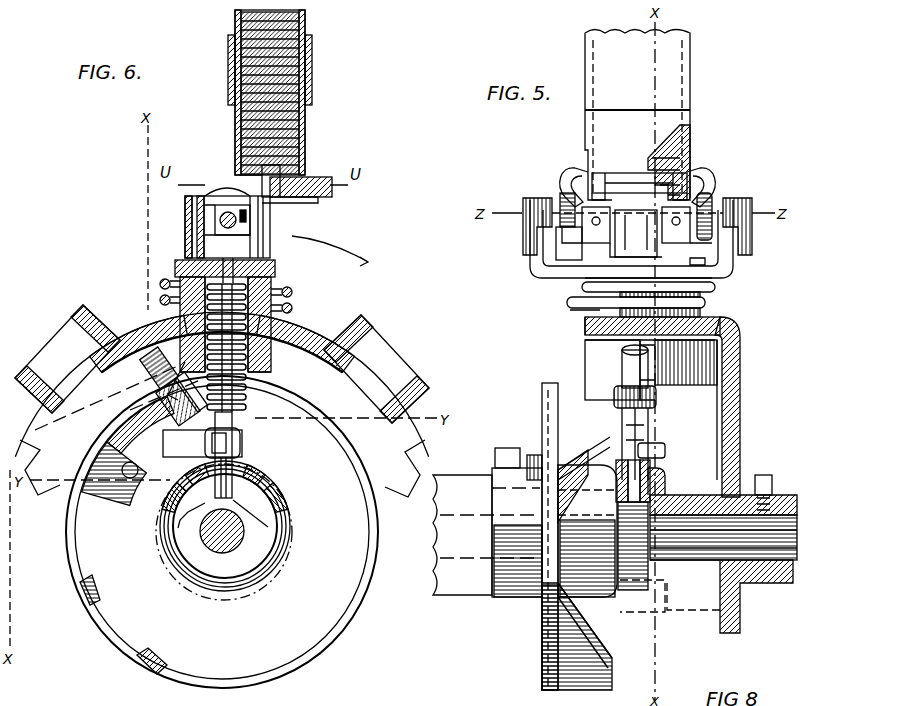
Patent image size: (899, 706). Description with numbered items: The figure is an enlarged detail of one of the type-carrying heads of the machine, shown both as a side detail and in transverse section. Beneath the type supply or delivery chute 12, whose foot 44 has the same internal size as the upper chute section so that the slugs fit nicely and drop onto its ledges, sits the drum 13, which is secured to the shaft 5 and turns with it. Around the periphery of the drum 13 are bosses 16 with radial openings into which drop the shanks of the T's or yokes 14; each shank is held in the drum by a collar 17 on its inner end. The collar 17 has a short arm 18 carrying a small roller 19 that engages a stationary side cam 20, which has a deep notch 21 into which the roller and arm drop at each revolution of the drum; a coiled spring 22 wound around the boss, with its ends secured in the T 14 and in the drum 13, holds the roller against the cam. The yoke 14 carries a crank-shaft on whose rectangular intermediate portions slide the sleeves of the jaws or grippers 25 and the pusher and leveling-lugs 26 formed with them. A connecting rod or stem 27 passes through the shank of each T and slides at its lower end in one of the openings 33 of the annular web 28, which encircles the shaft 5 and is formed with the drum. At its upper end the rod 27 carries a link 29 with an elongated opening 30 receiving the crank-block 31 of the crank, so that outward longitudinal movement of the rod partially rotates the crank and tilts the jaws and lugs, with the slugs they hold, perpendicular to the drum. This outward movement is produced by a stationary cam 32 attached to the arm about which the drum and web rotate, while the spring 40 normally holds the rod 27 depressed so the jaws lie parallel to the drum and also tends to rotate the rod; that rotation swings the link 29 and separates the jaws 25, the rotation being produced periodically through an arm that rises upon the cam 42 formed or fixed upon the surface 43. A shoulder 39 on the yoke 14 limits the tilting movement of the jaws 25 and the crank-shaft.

In FIG. 5, the shaft 5 is at (710, 560).
In FIG. 5, the type supply or delivery chute 12 is at (690, 38).
In FIG. 6, the drum 13 is at (320, 336).
In FIG. 5, the drum 13 is at (585, 345).
In FIG. 6, the T or yoke 14 is at (200, 212).
In FIG. 5, the T or yoke 14 is at (735, 275).
In FIG. 6, the boss 16 is at (70, 338).
In FIG. 5, the boss 16 is at (585, 322).
In FIG. 6, the collar 17 is at (271, 372).
In FIG. 6, the short arm 18 is at (150, 380).
In FIG. 5, the short arm 18 is at (585, 372).
In FIG. 6, the small roller 19 is at (165, 395).
In FIG. 5, the small roller 19 is at (656, 398).
In FIG. 6, the stationary side cam 20 is at (130, 435).
In FIG. 5, the stationary side cam 20 is at (560, 408).
In FIG. 6, the deep notch 21 is at (78, 548).
In FIG. 6, the coiled spring 22 is at (292, 292).
In FIG. 5, the coiled spring 22 is at (710, 305).
In FIG. 5, the jaws or grippers 25 is at (565, 186).
In FIG. 5, the pusher and leveling-lugs 26 is at (608, 175).
In FIG. 6, the connecting rod or stem 27 is at (232, 465).
In FIG. 6, the annular web 28 is at (290, 505).
In FIG. 5, the annular web 28 is at (660, 472).
In FIG. 6, the link 29 is at (225, 196).
In FIG. 6, the elongated opening 30 is at (250, 220).
In FIG. 6, the crank-block 31 is at (258, 240).
In FIG. 6, the stationary cam 32 is at (262, 537).
In FIG. 6, the openings in the web 33 is at (266, 480).
In FIG. 5, the shoulder 39 is at (560, 232).
In FIG. 6, the spring 40 is at (246, 408).
In FIG. 6, the cam 42 is at (128, 500).
In FIG. 5, the cam 42 is at (560, 488).
In FIG. 6, the surface 43 is at (141, 624).
In FIG. 5, the surface 43 is at (560, 540).
In FIG. 5, the foot of the delivery-chute 44 is at (690, 95).